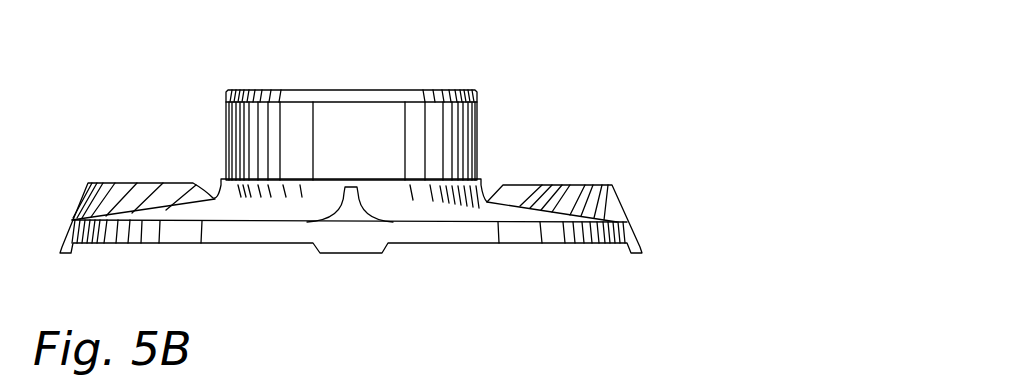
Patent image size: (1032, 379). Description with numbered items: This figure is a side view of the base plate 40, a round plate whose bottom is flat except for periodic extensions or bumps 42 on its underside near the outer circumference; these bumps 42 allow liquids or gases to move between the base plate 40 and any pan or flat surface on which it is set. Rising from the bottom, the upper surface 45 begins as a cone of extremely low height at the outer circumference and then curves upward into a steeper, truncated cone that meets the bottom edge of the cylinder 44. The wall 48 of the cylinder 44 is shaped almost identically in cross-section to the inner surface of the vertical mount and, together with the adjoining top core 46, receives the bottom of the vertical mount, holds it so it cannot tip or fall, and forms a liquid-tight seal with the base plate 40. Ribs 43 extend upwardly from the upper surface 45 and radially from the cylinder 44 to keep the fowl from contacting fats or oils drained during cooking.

The base plate 40 is at (482, 184).
The extensions or bumps 42 is at (643, 253).
The ribs 43 is at (612, 186).
The cylinder 44 is at (226, 142).
The upper surface 45 is at (412, 212).
The top core 46 is at (300, 90).
The wall 48 is at (382, 142).